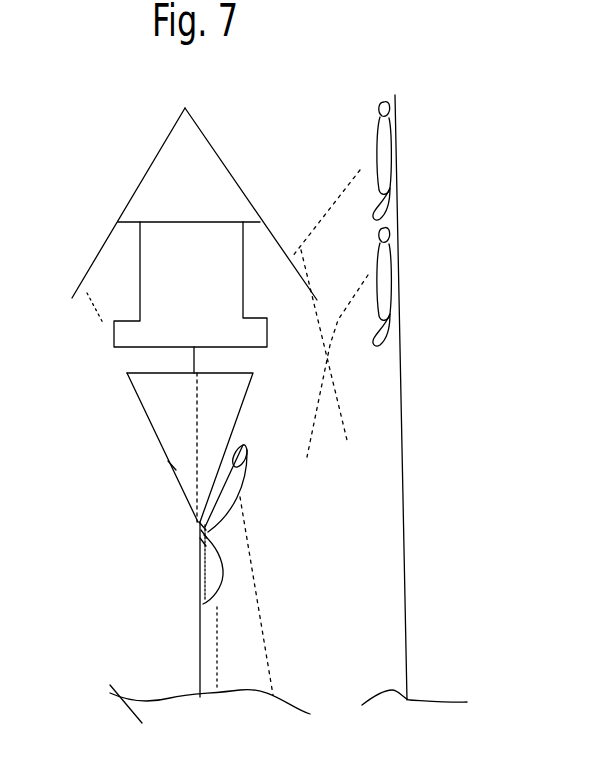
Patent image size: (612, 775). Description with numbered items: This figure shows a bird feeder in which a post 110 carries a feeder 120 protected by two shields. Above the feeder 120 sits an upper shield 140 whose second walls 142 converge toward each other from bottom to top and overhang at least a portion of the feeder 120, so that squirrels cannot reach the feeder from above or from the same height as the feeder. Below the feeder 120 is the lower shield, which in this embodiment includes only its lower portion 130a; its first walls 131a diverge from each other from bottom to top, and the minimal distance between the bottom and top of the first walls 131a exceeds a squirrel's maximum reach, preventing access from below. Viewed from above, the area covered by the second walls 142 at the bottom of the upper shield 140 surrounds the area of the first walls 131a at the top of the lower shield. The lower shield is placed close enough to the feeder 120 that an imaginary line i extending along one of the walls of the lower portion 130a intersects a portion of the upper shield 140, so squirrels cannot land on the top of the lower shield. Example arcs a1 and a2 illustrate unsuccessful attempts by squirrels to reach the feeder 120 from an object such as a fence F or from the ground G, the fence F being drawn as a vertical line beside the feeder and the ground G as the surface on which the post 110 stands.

The post 110 is at (203, 605).
The feeder 120 is at (240, 277).
The lower portion of lower shield 130a is at (173, 468).
The first walls 131a is at (153, 427).
The upper shield 140 is at (233, 178).
The second walls 142 is at (95, 262).
The fence F is at (427, 565).
The ground G is at (128, 702).
The imaginary line i is at (102, 326).
The arc a1 is at (342, 193).
The arc a2 is at (357, 293).